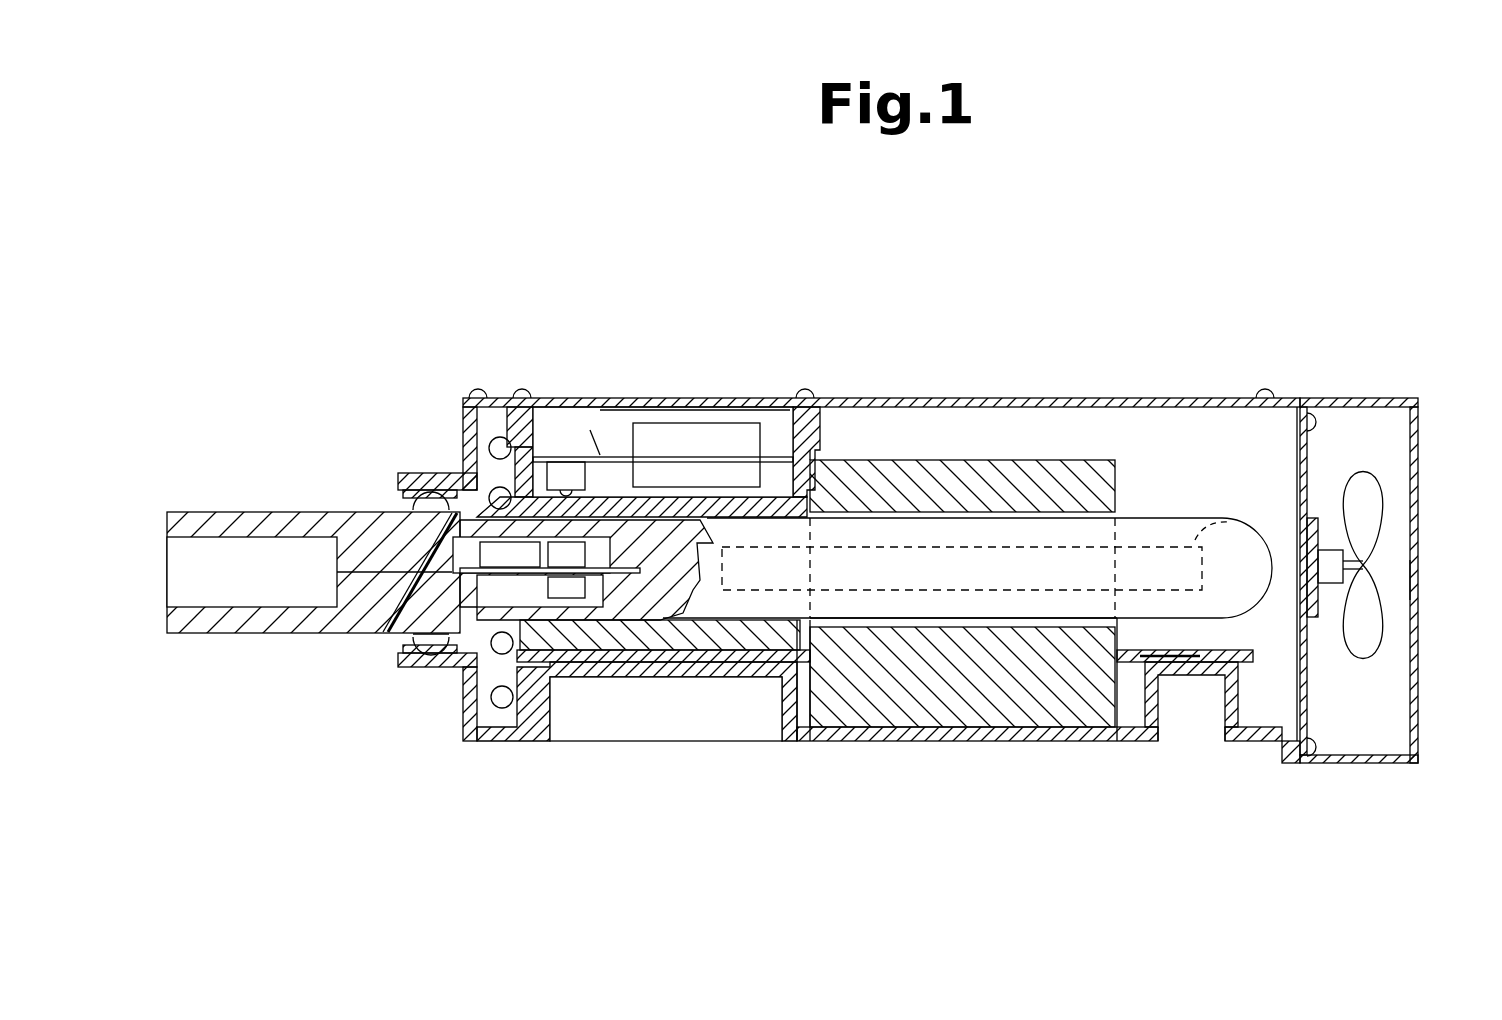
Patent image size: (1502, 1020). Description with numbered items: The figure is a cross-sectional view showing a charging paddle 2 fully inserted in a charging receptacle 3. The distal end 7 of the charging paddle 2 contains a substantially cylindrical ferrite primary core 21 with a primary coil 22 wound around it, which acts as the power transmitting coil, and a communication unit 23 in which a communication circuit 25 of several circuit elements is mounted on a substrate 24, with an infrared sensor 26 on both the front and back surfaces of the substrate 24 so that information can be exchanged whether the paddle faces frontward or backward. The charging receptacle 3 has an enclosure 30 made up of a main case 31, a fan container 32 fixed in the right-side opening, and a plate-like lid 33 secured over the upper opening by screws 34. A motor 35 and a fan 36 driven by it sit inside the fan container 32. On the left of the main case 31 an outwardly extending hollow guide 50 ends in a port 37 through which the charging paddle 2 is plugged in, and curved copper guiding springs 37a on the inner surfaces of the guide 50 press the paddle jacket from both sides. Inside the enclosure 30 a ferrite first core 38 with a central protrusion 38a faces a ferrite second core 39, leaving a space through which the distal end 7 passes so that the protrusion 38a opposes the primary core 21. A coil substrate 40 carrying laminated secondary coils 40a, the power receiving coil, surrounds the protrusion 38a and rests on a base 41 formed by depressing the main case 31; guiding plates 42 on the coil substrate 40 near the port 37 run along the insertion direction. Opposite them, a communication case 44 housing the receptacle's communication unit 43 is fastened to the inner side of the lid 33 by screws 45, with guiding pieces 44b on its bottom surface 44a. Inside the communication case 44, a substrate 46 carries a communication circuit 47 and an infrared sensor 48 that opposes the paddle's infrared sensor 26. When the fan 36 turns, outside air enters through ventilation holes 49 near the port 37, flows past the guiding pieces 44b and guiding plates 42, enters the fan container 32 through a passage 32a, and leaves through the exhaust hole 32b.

The charging paddle 2 is at (232, 508).
The charging receptacle 3 is at (885, 398).
The distal end 7 is at (1188, 518).
The primary core 21 is at (1137, 523).
The primary coil 22 is at (1230, 517).
The communication unit 23 is at (447, 577).
The substrate 24 is at (488, 523).
The communication circuit 25 is at (497, 550).
The infrared sensor 26 is at (582, 553).
The enclosure 30 is at (472, 743).
The main case 31 is at (500, 743).
The fan container 32 is at (1353, 397).
The passage 32a is at (1303, 483).
The exhaust hole 32b is at (1420, 577).
The lid 33 is at (1003, 397).
The screws 34 is at (472, 397).
The motor 35 is at (1335, 587).
The fan 36 is at (1372, 652).
The port 37 is at (400, 502).
The guiding springs 37a is at (400, 487).
The first core 38 is at (1008, 707).
The central protrusion 38a is at (897, 630).
The second core 39 is at (952, 467).
The coil substrate 40 is at (1238, 648).
The secondary coils 40a is at (1197, 662).
The base 41 is at (1188, 667).
The guiding plates 42 is at (660, 637).
The communication unit 43 is at (667, 417).
The communication case 44 is at (823, 407).
The bottom surface 44a is at (747, 512).
The guiding pieces 44b is at (600, 440).
The screws 45 is at (522, 393).
The substrate 46 is at (653, 457).
The communication circuit 47 is at (723, 435).
The infrared sensor 48 is at (570, 467).
The ventilation holes 49 is at (500, 698).
The guide 50 is at (397, 665).